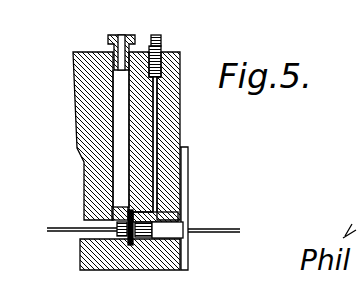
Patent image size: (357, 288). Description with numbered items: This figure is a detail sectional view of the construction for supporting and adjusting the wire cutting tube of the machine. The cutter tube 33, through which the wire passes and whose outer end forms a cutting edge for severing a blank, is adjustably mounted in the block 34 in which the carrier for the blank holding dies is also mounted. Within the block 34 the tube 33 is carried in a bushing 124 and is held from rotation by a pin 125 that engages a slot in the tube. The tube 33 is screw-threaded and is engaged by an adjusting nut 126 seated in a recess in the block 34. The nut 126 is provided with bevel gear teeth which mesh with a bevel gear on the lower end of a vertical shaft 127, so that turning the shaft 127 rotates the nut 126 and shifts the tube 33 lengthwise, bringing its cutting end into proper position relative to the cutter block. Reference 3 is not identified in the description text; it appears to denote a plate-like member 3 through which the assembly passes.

The block 34 is at (90, 81).
The vertical shaft 127 is at (119, 122).
The pin 125 is at (153, 130).
The bushing 124 is at (176, 213).
The plate 3 is at (57, 228).
The adjusting nut 126 is at (128, 240).
The cutter tube 33 is at (176, 232).